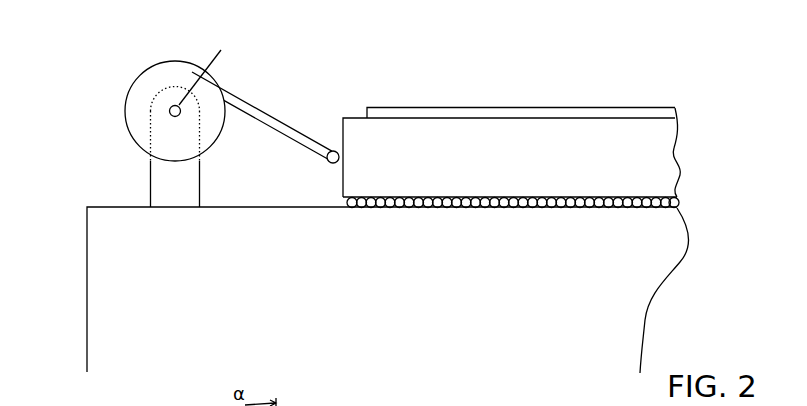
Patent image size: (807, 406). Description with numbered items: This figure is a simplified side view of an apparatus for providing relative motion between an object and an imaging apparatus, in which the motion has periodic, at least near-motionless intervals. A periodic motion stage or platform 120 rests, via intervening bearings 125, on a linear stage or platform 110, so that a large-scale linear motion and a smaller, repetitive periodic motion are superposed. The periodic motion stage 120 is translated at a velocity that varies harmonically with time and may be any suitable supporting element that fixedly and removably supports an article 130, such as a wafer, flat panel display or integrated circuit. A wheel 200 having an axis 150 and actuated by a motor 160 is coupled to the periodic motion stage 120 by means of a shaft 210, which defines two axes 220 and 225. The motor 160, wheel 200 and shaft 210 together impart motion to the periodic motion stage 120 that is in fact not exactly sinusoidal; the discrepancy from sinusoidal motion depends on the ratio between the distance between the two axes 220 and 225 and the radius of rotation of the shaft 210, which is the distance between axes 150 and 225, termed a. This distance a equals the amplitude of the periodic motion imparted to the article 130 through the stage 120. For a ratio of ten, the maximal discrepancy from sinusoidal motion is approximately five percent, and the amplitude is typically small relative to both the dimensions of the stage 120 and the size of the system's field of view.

The linear stage 110 is at (390, 292).
The periodic motion stage 120 is at (522, 178).
The bearings 125 is at (680, 205).
The article 130 is at (550, 118).
The axis 150 is at (169, 112).
The motor 160 is at (165, 183).
The wheel 200 is at (137, 77).
The shaft 210 is at (267, 117).
The axis 220 is at (334, 150).
The axis 225 is at (221, 50).